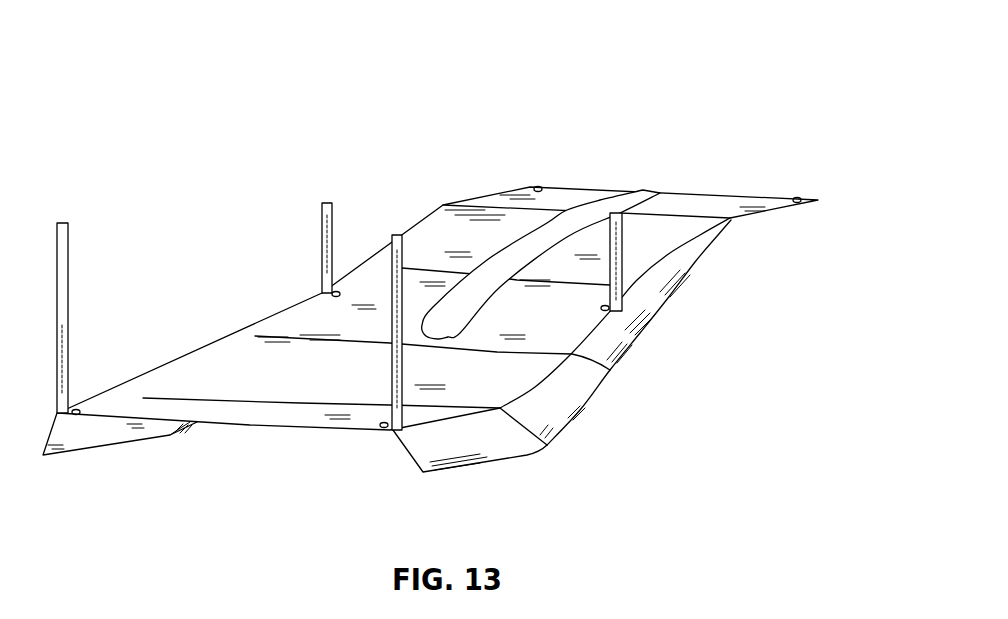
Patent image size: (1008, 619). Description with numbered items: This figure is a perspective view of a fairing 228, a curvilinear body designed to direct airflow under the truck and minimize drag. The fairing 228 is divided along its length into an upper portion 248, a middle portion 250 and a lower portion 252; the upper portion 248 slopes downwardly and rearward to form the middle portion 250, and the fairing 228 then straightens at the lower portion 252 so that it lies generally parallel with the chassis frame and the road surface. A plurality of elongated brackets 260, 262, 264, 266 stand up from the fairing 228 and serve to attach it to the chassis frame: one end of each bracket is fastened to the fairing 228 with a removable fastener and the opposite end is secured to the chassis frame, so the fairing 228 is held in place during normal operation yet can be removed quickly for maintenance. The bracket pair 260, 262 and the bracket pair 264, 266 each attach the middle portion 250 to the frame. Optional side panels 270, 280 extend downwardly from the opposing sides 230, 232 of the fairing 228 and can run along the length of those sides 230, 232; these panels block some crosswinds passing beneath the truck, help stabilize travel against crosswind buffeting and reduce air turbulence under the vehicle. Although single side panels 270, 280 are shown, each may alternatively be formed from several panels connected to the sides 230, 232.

The fairing 228 is at (350, 95).
The side 230 is at (228, 356).
The side 232 is at (533, 388).
The upper portion 248 is at (785, 278).
The middle portion 250 is at (738, 367).
The lower portion 252 is at (655, 196).
The elongated bracket 260 is at (322, 224).
The elongated bracket 262 is at (622, 234).
The elongated bracket 264 is at (65, 288).
The elongated bracket 266 is at (397, 235).
The side panel 270 is at (63, 440).
The side panel 280 is at (598, 378).